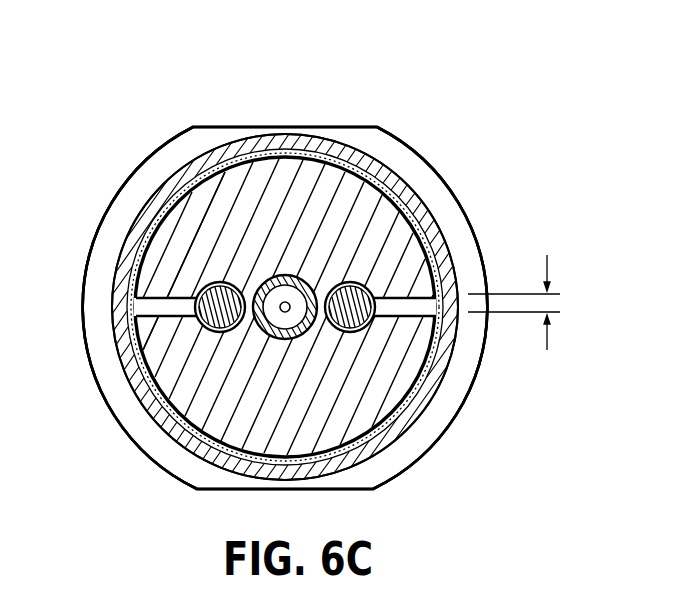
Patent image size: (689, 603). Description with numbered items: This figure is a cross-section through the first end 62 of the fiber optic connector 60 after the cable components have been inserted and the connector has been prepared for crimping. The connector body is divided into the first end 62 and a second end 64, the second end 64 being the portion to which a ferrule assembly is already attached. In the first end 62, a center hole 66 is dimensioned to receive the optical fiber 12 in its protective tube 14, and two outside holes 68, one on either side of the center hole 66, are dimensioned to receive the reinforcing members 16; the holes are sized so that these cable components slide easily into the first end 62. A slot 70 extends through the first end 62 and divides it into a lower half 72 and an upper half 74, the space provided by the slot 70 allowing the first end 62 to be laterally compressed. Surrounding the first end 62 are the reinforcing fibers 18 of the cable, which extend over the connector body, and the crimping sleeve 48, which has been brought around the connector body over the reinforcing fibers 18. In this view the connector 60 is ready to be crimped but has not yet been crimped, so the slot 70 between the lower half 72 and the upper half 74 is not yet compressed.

The fiber optic connector 60 is at (363, 80).
The reinforcing fibers 18 is at (213, 150).
The upper half 74 is at (260, 183).
The first end 62 is at (378, 128).
The second end 64 is at (407, 158).
The center hole 66 is at (245, 284).
The crimping sleeve 48 is at (136, 215).
The slot 70 is at (137, 311).
The reinforcing members 16 is at (200, 322).
The outside holes 68 is at (205, 338).
The lower half 72 is at (218, 417).
The protective tube 14 is at (312, 333).
The optical fiber 12 is at (289, 312).